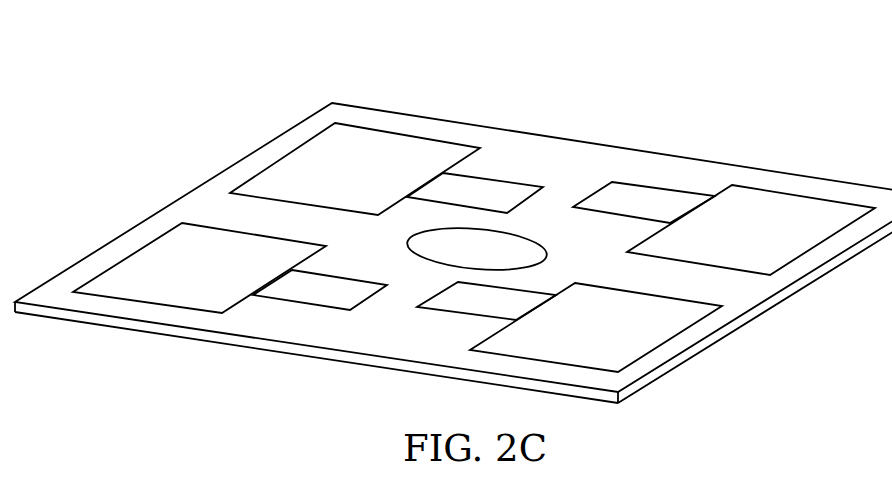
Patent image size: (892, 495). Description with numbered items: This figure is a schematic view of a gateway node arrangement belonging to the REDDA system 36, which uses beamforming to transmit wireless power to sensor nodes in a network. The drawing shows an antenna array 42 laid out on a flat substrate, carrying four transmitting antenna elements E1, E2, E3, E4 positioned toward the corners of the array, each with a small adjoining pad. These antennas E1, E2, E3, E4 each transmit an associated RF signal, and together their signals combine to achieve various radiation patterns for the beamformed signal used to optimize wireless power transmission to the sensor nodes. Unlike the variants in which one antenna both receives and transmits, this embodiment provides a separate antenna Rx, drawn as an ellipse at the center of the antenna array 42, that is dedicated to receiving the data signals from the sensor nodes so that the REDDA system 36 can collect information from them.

The REDDA system 36 is at (453, 214).
The antenna array 42 is at (566, 160).
The antenna element E1 is at (386, 169).
The antenna element E2 is at (724, 228).
The antenna element E3 is at (230, 268).
The antenna element E4 is at (569, 327).
The receiving antenna Rx is at (477, 249).